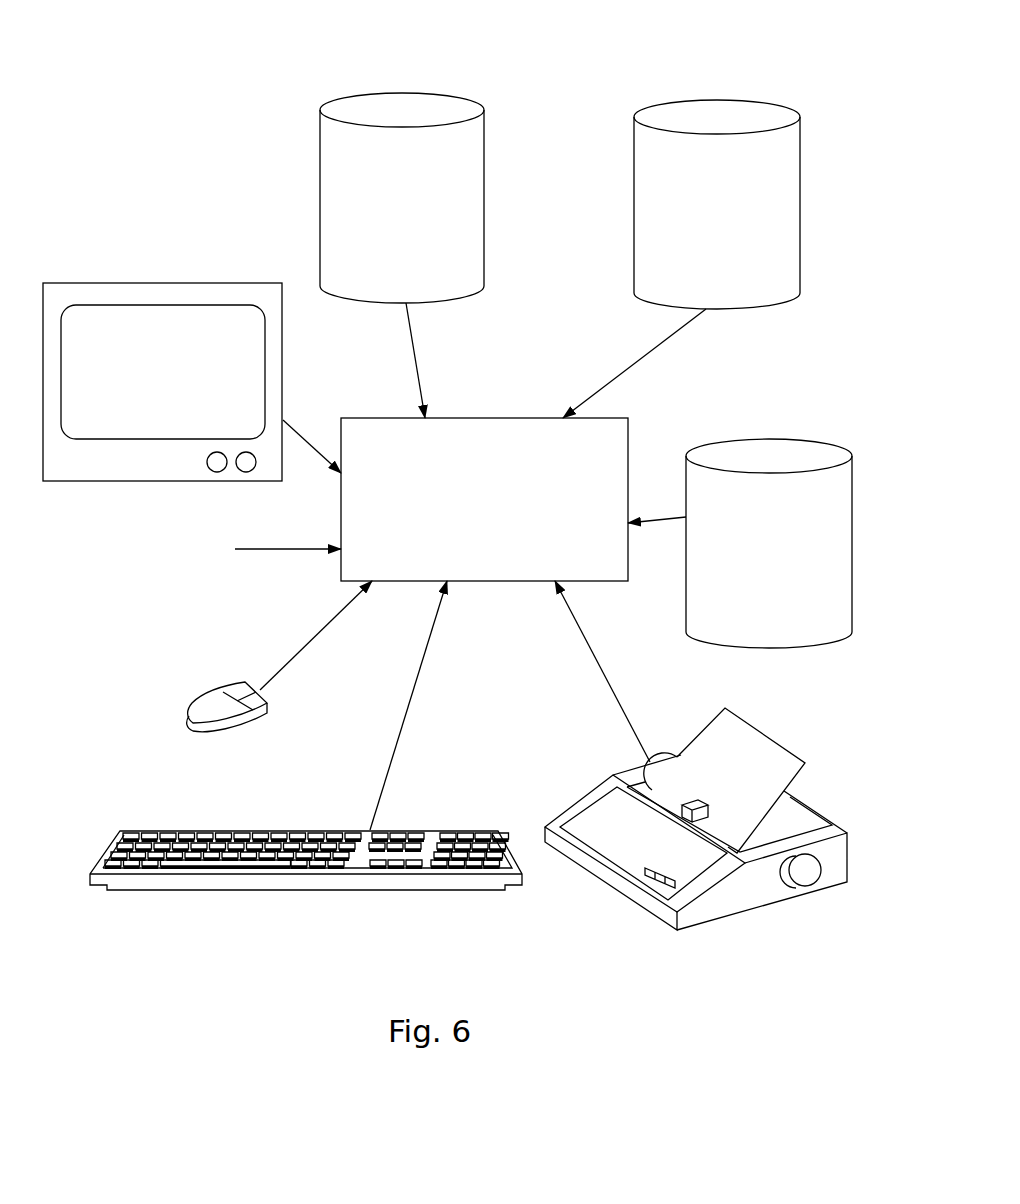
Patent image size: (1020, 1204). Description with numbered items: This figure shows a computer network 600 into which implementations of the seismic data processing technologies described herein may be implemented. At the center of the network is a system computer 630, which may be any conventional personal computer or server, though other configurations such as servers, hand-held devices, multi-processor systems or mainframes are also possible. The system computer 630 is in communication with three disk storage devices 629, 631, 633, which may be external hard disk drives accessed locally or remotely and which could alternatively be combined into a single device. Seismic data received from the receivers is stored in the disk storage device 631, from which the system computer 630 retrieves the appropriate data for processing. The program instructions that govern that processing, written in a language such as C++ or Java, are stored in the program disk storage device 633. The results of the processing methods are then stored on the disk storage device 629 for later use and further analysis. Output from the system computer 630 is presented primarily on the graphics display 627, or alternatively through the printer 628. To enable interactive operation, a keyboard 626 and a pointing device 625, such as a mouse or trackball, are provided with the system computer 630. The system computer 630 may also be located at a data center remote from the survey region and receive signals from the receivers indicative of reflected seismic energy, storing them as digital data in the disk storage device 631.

The computer network 600 is at (212, 87).
The pointing device 625 is at (206, 694).
The keyboard 626 is at (317, 890).
The graphics display 627 is at (177, 283).
The printer 628 is at (722, 920).
The disk storage device 629 is at (723, 438).
The system computer 630 is at (477, 418).
The disk storage device 631 is at (725, 100).
The program disk storage device 633 is at (377, 92).